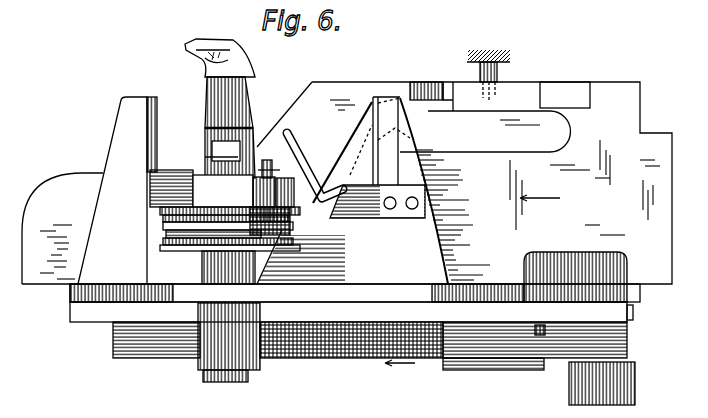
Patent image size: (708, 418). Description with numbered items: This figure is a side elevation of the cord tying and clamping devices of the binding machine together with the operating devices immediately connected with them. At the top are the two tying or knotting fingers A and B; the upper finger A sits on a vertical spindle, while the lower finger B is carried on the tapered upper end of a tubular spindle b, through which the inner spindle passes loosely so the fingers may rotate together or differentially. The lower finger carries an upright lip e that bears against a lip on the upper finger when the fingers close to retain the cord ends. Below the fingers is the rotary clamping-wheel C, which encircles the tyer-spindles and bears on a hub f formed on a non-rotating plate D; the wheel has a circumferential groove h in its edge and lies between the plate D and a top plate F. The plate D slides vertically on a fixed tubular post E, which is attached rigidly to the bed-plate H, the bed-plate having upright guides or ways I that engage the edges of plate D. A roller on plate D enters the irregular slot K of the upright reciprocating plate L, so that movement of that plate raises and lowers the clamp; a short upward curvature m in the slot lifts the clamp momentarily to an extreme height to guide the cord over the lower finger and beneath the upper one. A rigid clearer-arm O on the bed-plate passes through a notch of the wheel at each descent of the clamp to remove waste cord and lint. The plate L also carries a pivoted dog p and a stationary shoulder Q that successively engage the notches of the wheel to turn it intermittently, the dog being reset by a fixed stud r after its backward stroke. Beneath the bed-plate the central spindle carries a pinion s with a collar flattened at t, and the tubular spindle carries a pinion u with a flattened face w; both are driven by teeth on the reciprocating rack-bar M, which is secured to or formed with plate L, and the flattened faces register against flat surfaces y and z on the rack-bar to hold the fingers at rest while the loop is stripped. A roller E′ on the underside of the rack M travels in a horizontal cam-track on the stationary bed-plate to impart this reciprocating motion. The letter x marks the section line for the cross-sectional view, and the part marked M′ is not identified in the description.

The upper tying finger A is at (220, 44).
The lower tying finger B is at (218, 97).
The tubular spindle b is at (220, 138).
The fixed tubular post E is at (222, 152).
The upright lip e is at (212, 188).
The hub f is at (269, 162).
The top plate F is at (300, 180).
The clearer-arm O is at (294, 140).
The irregular slot K is at (320, 160).
The upright guides or ways I is at (244, 190).
The upright slotted plate L is at (347, 183).
The circumferential groove h is at (163, 228).
The rotary clamping-wheel C is at (208, 266).
The non-rotating plate D is at (337, 234).
The pivoted dog p is at (431, 86).
The fixed stud r is at (497, 76).
The upward curvature of slot m is at (408, 102).
The stationary shoulder Q is at (565, 95).
The bed-plate H is at (467, 300).
The flat surface of rack-bar z is at (529, 288).
The lower-finger pinion u is at (351, 313).
The flattened face w is at (262, 302).
The upper-finger pinion s is at (200, 362).
The flattened collar t is at (215, 362).
The reciprocating rack-bar M is at (351, 355).
The bar M′ is at (535, 340).
The flat surface of rack-bar y is at (493, 377).
The section line x is at (545, 325).
The roller E′ is at (613, 383).